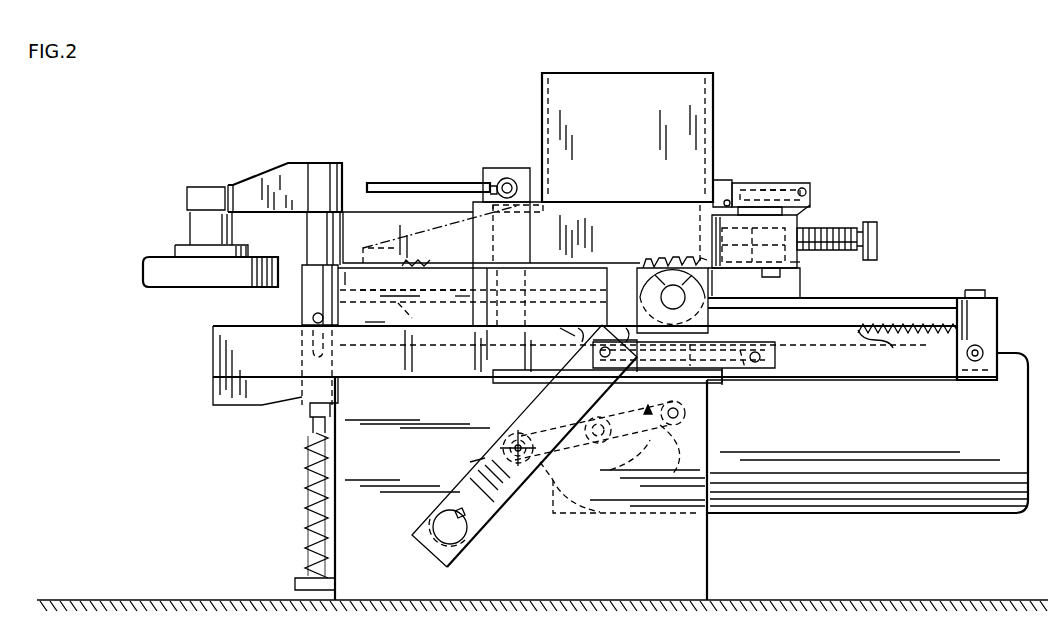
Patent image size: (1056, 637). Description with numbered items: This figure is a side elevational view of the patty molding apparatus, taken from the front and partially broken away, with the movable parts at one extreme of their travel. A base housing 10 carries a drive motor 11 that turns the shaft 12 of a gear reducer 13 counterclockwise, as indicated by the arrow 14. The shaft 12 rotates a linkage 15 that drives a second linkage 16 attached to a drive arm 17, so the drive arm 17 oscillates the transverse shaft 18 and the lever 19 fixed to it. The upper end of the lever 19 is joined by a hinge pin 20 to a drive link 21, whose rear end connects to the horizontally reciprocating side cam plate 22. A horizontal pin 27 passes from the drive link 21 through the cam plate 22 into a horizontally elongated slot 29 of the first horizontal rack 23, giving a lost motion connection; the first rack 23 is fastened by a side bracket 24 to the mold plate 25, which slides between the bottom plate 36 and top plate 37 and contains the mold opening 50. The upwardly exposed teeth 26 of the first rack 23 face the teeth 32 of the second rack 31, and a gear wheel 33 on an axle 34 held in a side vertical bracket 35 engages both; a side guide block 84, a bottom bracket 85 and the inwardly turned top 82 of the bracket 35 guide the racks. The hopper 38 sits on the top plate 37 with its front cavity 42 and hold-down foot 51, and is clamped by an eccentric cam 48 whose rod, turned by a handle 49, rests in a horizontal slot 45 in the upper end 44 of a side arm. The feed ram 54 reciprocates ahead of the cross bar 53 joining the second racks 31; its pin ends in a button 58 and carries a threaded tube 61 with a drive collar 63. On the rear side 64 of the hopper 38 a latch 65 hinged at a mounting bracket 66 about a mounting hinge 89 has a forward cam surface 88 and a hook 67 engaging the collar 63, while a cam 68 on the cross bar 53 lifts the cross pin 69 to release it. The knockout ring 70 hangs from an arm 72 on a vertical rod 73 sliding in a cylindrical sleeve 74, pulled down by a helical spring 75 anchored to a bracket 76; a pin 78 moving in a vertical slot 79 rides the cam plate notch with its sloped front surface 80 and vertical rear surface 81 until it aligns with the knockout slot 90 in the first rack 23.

The base housing 10 is at (387, 408).
The drive motor 11 is at (852, 426).
The shaft 12 is at (588, 452).
The gear reducer 13 is at (553, 513).
The arrow 14 is at (662, 458).
The linkage 15 is at (604, 446).
The second linkage 16 is at (573, 418).
The drive arm 17 is at (472, 462).
The transverse shaft 18 is at (465, 545).
The lever 19 is at (498, 512).
The hinge pin 20 is at (612, 372).
The drive link 21 is at (720, 387).
The side cam plate 22 is at (402, 368).
The first horizontal rack 23 is at (884, 326).
The side bracket 24 is at (995, 324).
The mold plate 25 is at (840, 298).
The teeth 26 is at (868, 332).
The horizontal pin 27 is at (760, 364).
The horizontally elongated slot 29 is at (746, 372).
The second rack 31 is at (447, 258).
The teeth 32 is at (400, 284).
The gear wheel 33 is at (706, 287).
The axle 34 is at (640, 292).
The side vertical bracket 35 is at (682, 217).
The bottom plate 36 is at (370, 318).
The top plate 37 is at (357, 283).
The hopper 38 is at (610, 114).
The front cavity 42 is at (470, 290).
The upper end 44 is at (490, 172).
The horizontal slot 45 is at (484, 188).
The cam 48 is at (510, 178).
The handle 49 is at (390, 182).
The mold opening 50 is at (419, 317).
The hold-down foot 51 is at (392, 250).
The cross bar 53 is at (800, 262).
The feed ram 54 is at (587, 225).
The button 58 is at (880, 236).
The threaded tube 61 is at (838, 228).
The drive collar 63 is at (778, 277).
The rear side 64 is at (713, 122).
The latch 65 is at (800, 185).
The mounting bracket 66 is at (722, 180).
The hook 67 is at (785, 211).
The cam 68 is at (778, 185).
The cross pin 69 is at (808, 190).
The knockout ring 70 is at (150, 272).
The arm 72 is at (290, 170).
The vertical rod 73 is at (312, 226).
The cylindrical sleeve 74 is at (305, 286).
The helical spring 75 is at (305, 486).
The bracket 76 is at (292, 582).
The pin 78 is at (315, 313).
The vertical slot 79 is at (300, 330).
The front surface 80 is at (562, 328).
The rear surface 81 is at (615, 341).
The inwardly turned top 82 is at (428, 199).
The side guide block 84 is at (565, 294).
The bottom bracket 85 is at (493, 378).
The forward cam surface 88 is at (805, 207).
The mounting hinge 89 is at (733, 200).
The knockout slot 90 is at (569, 326).